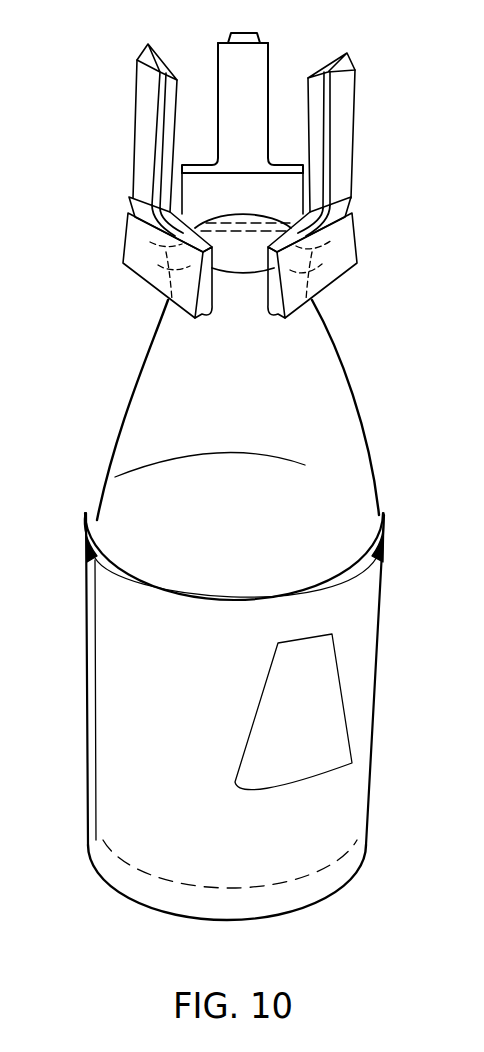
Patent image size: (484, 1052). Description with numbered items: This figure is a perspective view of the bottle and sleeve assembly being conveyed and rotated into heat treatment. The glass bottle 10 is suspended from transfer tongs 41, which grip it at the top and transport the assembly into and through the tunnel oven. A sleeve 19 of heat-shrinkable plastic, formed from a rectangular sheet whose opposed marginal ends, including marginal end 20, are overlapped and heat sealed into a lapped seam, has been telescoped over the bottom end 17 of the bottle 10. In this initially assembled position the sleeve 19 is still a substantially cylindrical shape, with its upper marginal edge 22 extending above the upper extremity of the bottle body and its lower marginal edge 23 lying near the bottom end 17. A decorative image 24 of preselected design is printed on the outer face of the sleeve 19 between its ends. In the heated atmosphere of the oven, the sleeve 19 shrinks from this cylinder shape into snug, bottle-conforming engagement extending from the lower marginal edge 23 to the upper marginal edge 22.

The glass bottle 10 is at (243, 412).
The bottom end 17 is at (227, 892).
The sleeve 19 is at (145, 708).
The marginal end 20 is at (85, 707).
The upper marginal edge 22 is at (248, 600).
The lower marginal edge 23 is at (158, 905).
The decorative image 24 is at (308, 787).
The transfer tongs 41 is at (311, 78).